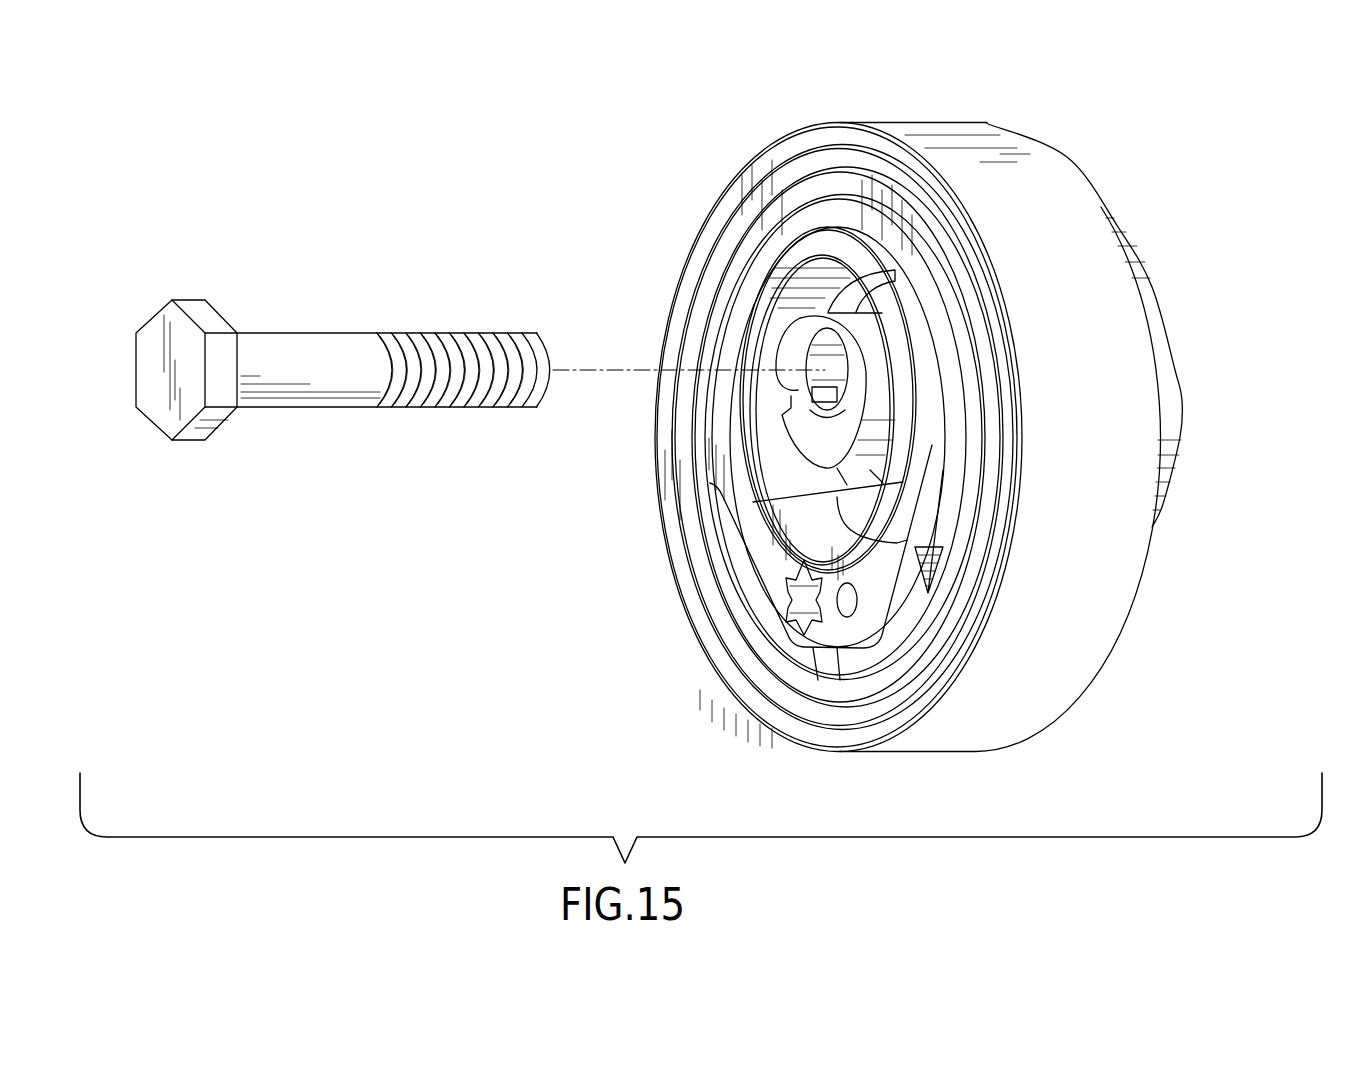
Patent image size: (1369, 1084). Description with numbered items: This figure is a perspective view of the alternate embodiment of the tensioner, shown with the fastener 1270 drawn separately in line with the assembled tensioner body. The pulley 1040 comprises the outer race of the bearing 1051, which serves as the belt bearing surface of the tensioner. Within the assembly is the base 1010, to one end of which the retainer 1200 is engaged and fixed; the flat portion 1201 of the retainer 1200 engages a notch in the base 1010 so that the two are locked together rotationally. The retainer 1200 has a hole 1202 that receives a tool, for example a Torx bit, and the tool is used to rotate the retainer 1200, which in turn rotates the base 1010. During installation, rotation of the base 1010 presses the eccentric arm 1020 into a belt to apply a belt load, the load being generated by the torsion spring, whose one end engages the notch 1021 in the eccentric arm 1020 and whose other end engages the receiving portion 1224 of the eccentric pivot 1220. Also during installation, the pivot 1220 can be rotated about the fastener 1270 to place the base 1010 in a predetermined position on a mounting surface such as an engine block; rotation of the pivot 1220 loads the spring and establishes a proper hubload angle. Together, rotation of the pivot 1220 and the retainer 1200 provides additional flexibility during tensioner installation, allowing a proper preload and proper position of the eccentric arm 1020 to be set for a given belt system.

The fastener 1270 is at (268, 340).
The pulley 1040 is at (1048, 208).
The bearing 1051 is at (885, 197).
The base 1010 is at (882, 307).
The eccentric arm 1020 is at (917, 615).
The retainer 1200 is at (768, 530).
The flat portion 1201 is at (1007, 542).
The eccentric pivot 1220 is at (813, 447).
The receiving portion 1224 is at (783, 402).
The hole 1202 is at (790, 595).
The notch 1021 is at (830, 660).